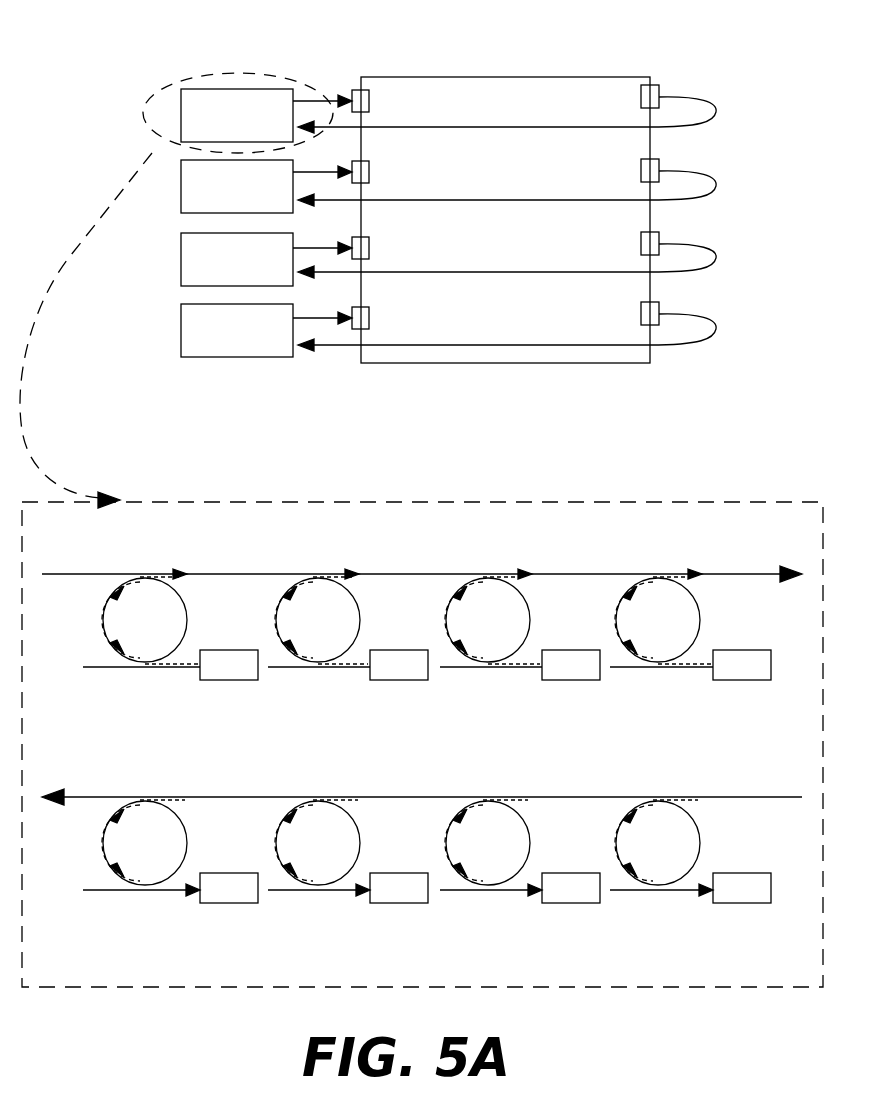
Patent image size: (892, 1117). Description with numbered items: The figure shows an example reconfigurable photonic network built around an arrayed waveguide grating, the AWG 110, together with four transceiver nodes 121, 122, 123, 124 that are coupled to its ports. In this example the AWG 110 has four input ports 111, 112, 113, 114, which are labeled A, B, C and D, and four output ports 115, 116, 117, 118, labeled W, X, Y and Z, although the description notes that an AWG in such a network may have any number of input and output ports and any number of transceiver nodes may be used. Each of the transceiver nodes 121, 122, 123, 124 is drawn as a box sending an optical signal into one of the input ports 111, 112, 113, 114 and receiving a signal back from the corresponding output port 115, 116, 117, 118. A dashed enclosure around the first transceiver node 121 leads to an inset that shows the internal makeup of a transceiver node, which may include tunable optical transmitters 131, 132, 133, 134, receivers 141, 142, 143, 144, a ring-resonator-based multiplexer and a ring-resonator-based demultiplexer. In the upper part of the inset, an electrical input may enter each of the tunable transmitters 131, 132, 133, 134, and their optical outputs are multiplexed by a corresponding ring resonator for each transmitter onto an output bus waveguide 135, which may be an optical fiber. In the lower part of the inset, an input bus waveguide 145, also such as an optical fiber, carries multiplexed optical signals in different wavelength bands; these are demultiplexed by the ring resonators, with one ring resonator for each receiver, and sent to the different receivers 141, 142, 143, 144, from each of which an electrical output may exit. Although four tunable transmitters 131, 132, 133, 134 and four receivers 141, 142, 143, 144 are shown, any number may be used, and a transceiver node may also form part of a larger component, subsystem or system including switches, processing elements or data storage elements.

The AWG 110 is at (567, 77).
The input port A 111 is at (369, 92).
The input port B 112 is at (369, 164).
The input port C 113 is at (369, 240).
The input port D 114 is at (369, 310).
The output port W 115 is at (659, 86).
The output port X 116 is at (659, 162).
The output port Y 117 is at (659, 236).
The output port Z 118 is at (659, 306).
The transceiver node 121 is at (181, 118).
The transceiver node 122 is at (181, 192).
The transceiver node 123 is at (181, 260).
The transceiver node 124 is at (181, 330).
The tunable optical transmitter 131 is at (746, 680).
The tunable optical transmitter 132 is at (574, 680).
The tunable optical transmitter 133 is at (404, 680).
The tunable optical transmitter 134 is at (238, 680).
The output bus waveguide 135 is at (732, 574).
The receiver 141 is at (746, 903).
The receiver 142 is at (574, 903).
The receiver 143 is at (404, 903).
The receiver 144 is at (238, 903).
The input bus waveguide 145 is at (732, 797).